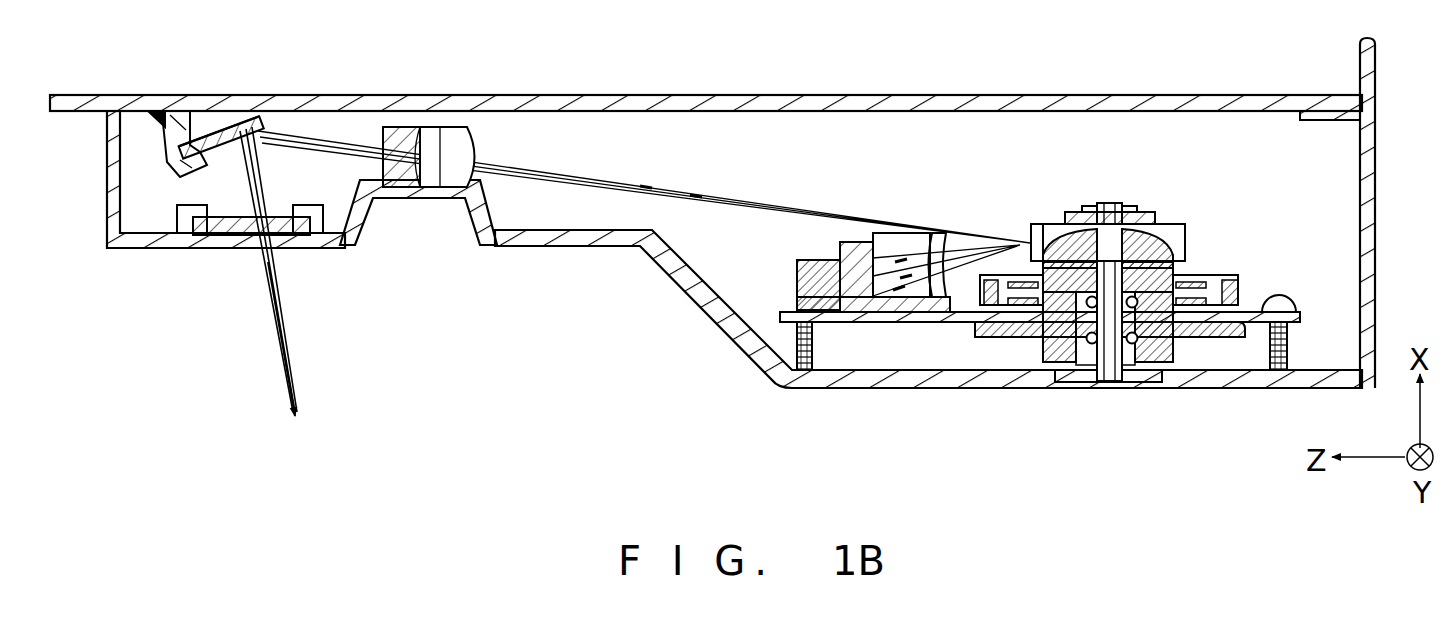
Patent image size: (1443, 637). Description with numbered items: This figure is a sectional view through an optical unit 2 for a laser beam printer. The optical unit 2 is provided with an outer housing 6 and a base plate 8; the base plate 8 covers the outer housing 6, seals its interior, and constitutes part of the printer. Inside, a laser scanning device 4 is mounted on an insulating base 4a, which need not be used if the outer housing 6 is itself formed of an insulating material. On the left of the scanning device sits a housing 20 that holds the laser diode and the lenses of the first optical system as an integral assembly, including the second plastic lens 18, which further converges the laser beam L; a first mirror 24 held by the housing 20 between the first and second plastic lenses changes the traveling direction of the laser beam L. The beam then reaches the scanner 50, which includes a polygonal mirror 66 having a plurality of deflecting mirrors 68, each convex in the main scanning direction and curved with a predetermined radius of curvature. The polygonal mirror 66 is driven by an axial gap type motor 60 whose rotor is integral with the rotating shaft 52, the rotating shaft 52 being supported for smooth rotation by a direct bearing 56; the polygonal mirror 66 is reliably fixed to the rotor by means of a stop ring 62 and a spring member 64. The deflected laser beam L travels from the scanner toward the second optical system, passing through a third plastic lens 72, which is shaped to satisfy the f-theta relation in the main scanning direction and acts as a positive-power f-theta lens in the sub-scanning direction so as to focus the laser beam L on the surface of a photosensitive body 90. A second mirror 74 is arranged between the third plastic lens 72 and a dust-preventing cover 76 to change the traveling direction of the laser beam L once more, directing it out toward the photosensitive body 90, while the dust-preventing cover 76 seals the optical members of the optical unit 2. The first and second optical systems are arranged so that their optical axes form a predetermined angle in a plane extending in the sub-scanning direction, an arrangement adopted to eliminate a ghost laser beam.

The optical unit 2 is at (1186, 86).
The laser scanning device 4 is at (1307, 307).
The insulating base 4a is at (1252, 308).
The outer housing 6 is at (556, 250).
The base plate 8 is at (840, 96).
The second plastic lens 18 is at (938, 237).
The housing 20 is at (803, 260).
The first mirror 24 is at (883, 242).
The scanner 50 is at (1196, 250).
The rotating shaft 52 is at (1108, 203).
The direct bearing 56 is at (1135, 382).
The axial gap type motor 60 is at (1207, 335).
The stop ring 62 is at (1128, 208).
The spring member 64 is at (1073, 224).
The polygonal mirror 66 is at (1042, 228).
The deflecting mirror 68 is at (1186, 247).
The third plastic lens 72 is at (445, 127).
The second mirror 74 is at (216, 122).
The dust-preventing cover 76 is at (213, 250).
The laser beam L is at (557, 178).
The photosensitive body 90 is at (306, 293).